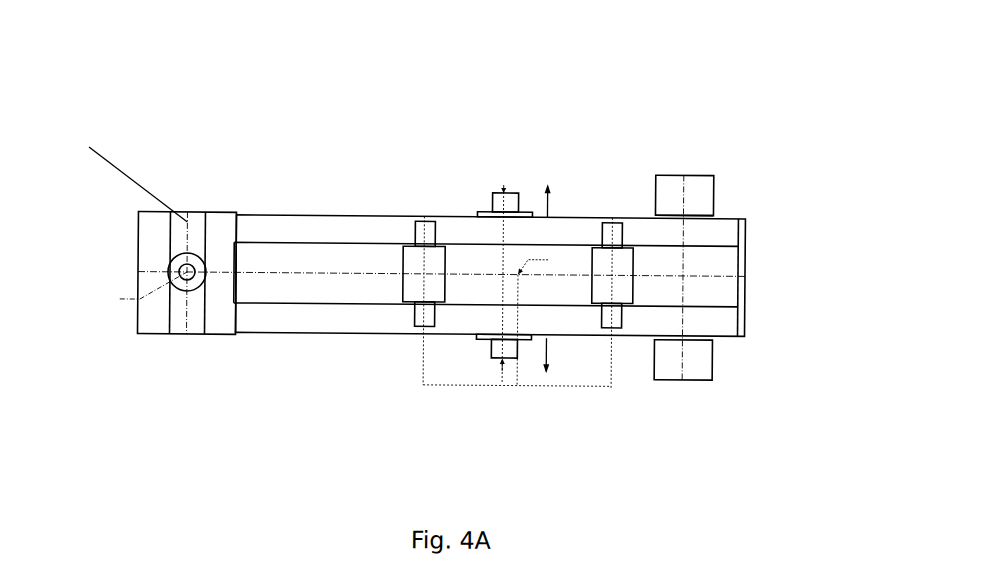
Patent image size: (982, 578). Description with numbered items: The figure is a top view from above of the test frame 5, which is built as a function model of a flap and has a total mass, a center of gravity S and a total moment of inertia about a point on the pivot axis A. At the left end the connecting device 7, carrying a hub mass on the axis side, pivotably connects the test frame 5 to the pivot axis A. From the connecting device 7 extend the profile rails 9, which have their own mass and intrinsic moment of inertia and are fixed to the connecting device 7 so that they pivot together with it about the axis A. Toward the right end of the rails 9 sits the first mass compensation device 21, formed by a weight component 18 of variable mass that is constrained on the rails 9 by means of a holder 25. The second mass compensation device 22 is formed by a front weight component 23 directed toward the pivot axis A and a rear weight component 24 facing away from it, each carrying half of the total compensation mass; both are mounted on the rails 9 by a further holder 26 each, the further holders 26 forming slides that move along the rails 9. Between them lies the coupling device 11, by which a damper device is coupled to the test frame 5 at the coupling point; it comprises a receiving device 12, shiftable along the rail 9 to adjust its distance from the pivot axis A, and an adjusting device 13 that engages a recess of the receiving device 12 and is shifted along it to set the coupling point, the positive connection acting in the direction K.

The test frame 5 is at (188, 120).
The connecting device 7 is at (157, 264).
The rails 9 is at (650, 320).
The coupling device 11 is at (490, 211).
The receiving device 12 is at (513, 341).
The adjusting device 13 is at (495, 196).
The weight component 18 is at (743, 278).
The first mass compensation device 21 is at (690, 192).
The second mass compensation device 22 is at (457, 287).
The front weight component 23 is at (435, 289).
The rear weight component 24 is at (603, 270).
The holder 25 is at (712, 208).
The further holder 26 is at (425, 232).